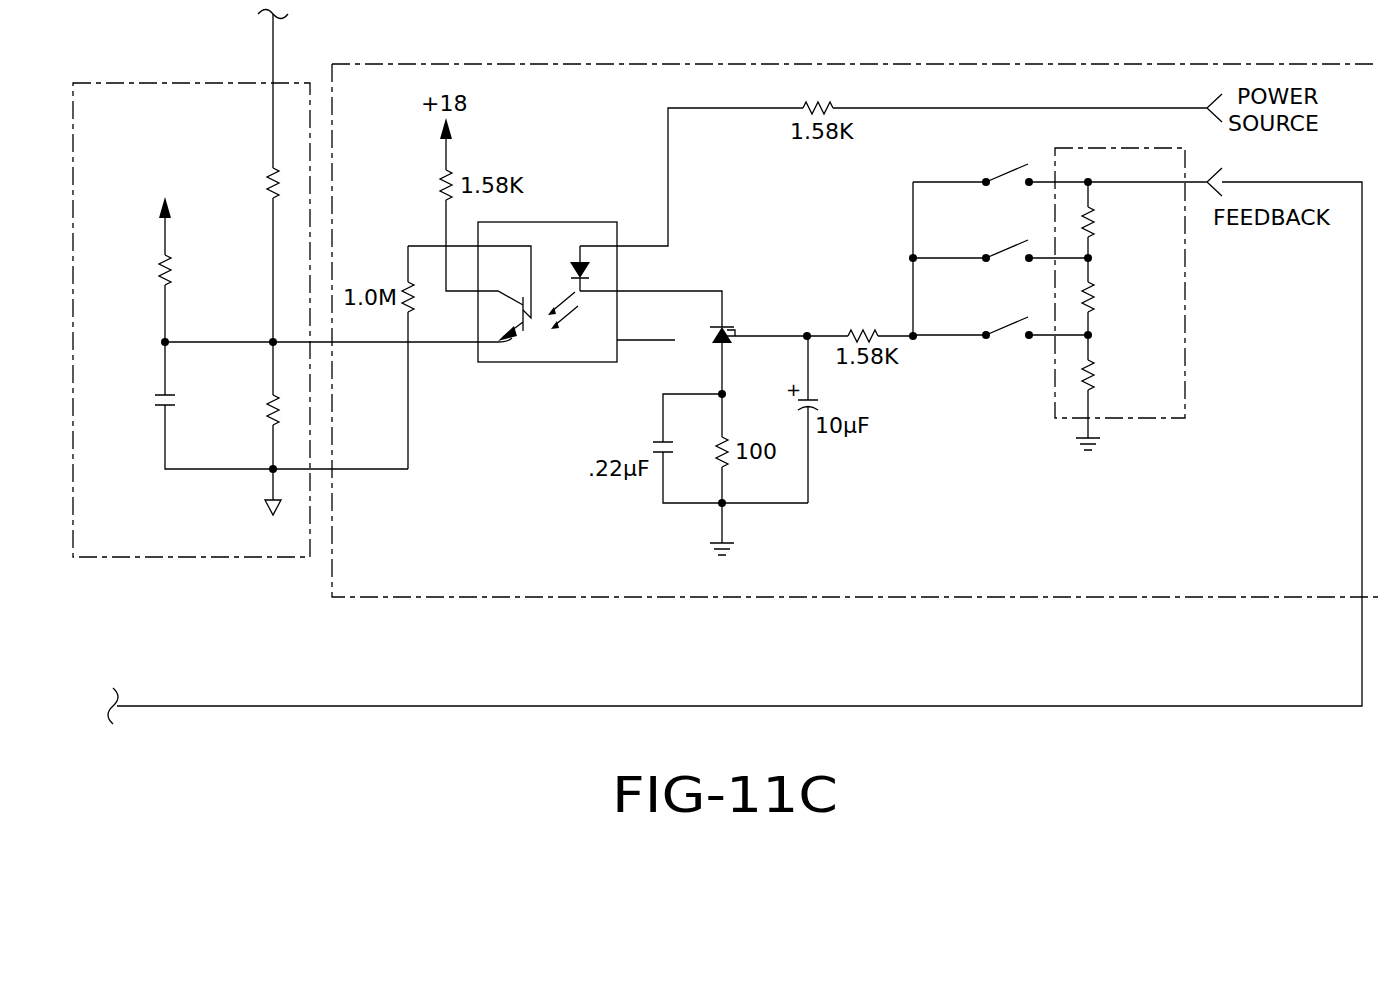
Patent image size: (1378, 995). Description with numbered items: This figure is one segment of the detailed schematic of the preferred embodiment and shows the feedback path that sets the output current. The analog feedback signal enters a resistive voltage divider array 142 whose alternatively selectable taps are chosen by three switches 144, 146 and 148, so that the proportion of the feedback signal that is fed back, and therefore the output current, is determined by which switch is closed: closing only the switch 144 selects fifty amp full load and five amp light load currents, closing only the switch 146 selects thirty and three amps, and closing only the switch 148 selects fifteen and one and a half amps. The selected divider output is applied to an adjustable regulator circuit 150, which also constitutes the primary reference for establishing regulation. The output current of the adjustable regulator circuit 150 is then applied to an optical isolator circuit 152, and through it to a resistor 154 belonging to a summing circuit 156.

The resistive voltage divider array 142 is at (1068, 420).
The switch 144 is at (1012, 327).
The switch 146 is at (1012, 251).
The switch 148 is at (1012, 174).
The adjustable regulator circuit 150 is at (780, 300).
The optical isolator circuit 152 is at (544, 210).
The resistor 154 is at (272, 425).
The summing circuit 156 is at (240, 313).